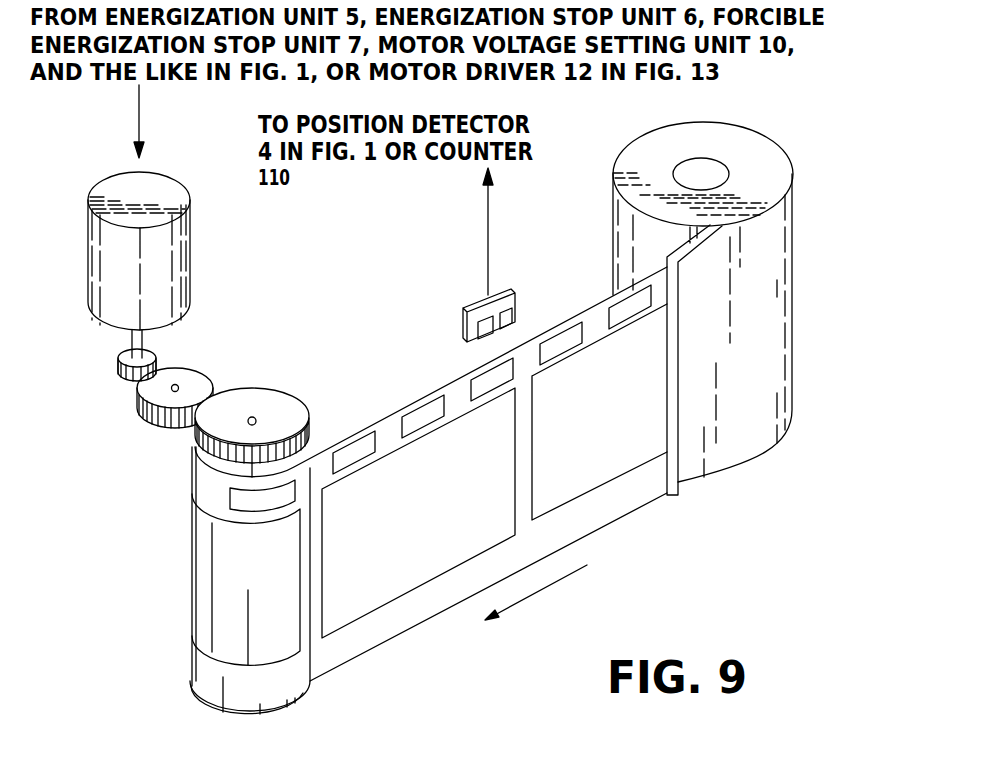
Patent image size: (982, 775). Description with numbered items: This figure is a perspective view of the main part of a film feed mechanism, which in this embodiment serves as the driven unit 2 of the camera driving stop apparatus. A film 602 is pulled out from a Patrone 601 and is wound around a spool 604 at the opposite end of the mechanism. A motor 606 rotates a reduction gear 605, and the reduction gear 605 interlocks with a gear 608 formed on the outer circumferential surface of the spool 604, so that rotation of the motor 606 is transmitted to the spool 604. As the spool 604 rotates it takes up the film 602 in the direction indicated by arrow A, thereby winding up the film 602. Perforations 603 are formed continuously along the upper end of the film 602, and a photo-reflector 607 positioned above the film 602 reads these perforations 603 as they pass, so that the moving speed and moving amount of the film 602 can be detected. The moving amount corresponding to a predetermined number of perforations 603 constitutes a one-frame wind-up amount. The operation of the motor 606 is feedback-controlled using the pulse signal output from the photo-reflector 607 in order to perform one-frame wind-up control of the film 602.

The driven unit 2 is at (150, 579).
The Patrone 601 is at (633, 155).
The film 602 is at (456, 468).
The perforations 603 is at (572, 326).
The spool 604 is at (231, 533).
The reduction gear 605 is at (132, 390).
The motor 606 is at (167, 187).
The photo-reflector 607 is at (478, 303).
The gear 608 is at (197, 430).